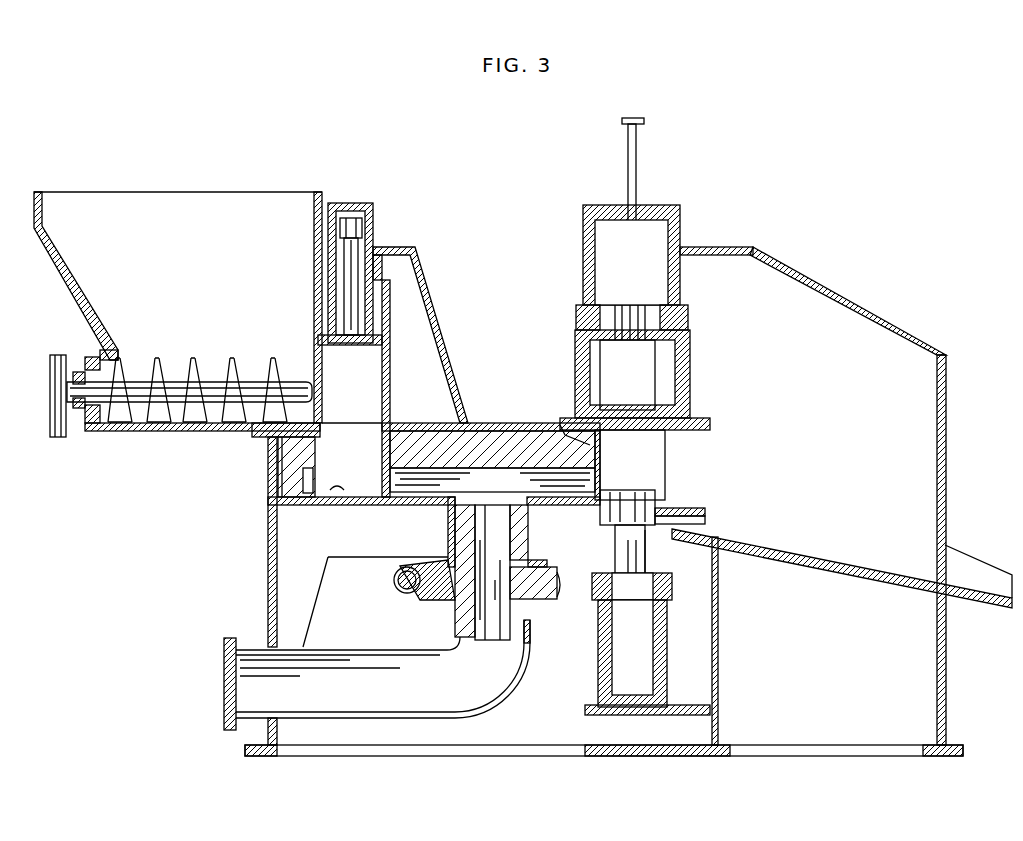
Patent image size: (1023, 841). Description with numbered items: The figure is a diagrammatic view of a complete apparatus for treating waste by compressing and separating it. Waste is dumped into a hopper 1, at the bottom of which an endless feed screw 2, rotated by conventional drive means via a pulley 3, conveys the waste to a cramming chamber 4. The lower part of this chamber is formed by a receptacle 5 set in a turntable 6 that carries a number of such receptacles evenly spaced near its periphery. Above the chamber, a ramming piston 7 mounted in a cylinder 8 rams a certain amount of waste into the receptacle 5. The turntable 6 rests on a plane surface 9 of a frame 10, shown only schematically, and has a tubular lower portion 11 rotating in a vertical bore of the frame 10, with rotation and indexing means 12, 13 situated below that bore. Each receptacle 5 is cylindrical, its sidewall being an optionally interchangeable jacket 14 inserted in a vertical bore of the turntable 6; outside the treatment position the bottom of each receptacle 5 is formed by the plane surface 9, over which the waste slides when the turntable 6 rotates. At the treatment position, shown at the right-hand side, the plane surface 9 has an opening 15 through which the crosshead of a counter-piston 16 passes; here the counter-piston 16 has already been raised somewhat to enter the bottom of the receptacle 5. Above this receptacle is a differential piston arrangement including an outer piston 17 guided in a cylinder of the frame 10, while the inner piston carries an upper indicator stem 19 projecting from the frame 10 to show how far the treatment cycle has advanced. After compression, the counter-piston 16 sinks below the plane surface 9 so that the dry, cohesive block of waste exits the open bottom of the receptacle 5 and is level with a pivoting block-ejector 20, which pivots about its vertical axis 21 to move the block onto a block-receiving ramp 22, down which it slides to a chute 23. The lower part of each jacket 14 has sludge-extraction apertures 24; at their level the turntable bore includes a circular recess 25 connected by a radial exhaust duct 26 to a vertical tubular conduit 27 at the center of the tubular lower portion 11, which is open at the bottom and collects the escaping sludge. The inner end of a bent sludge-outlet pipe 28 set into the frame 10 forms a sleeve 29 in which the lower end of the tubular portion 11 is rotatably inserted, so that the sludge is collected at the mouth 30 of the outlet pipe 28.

The hopper 1 is at (103, 212).
The endless feed screw 2 is at (190, 415).
The pulley 3 is at (50, 372).
The cramming chamber 4 is at (305, 372).
The receptacle 5 is at (345, 450).
The turntable 6 is at (470, 436).
The ramming piston 7 is at (345, 214).
The cylinder 8 is at (362, 206).
The plane surface 9 is at (330, 490).
The frame 10 is at (268, 550).
The tubular lower portion 11 is at (520, 536).
The rotation and indexing means 12 is at (438, 585).
The rotation and indexing means 13 is at (398, 590).
The jacket 14 is at (310, 450).
The opening 15 is at (600, 500).
The counter-piston 16 is at (652, 522).
The outer piston 17 is at (665, 386).
The indicator stem 19 is at (632, 160).
The block-ejector 20 is at (690, 512).
The vertical axis 21 is at (690, 535).
The block-receiving ramp 22 is at (818, 558).
The chute 23 is at (975, 568).
The sludge-extraction apertures 24 is at (565, 435).
The circular recess 25 is at (305, 484).
The radial exhaust duct 26 is at (528, 480).
The tubular conduit 27 is at (498, 589).
The sludge-outlet pipe 28 is at (488, 668).
The sleeve 29 is at (530, 635).
The mouth 30 is at (240, 698).